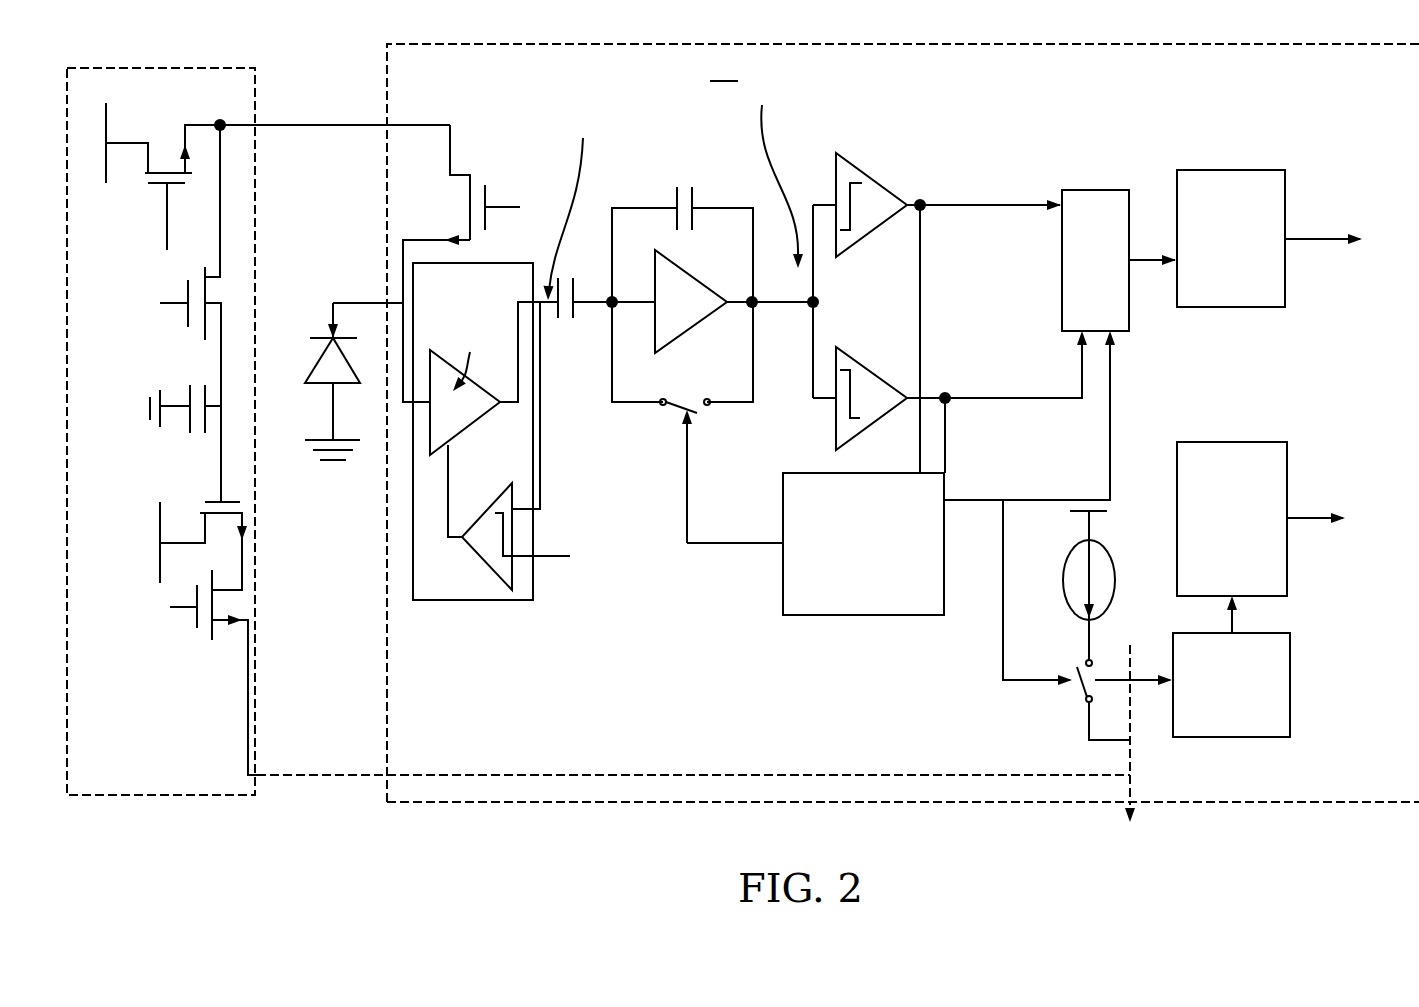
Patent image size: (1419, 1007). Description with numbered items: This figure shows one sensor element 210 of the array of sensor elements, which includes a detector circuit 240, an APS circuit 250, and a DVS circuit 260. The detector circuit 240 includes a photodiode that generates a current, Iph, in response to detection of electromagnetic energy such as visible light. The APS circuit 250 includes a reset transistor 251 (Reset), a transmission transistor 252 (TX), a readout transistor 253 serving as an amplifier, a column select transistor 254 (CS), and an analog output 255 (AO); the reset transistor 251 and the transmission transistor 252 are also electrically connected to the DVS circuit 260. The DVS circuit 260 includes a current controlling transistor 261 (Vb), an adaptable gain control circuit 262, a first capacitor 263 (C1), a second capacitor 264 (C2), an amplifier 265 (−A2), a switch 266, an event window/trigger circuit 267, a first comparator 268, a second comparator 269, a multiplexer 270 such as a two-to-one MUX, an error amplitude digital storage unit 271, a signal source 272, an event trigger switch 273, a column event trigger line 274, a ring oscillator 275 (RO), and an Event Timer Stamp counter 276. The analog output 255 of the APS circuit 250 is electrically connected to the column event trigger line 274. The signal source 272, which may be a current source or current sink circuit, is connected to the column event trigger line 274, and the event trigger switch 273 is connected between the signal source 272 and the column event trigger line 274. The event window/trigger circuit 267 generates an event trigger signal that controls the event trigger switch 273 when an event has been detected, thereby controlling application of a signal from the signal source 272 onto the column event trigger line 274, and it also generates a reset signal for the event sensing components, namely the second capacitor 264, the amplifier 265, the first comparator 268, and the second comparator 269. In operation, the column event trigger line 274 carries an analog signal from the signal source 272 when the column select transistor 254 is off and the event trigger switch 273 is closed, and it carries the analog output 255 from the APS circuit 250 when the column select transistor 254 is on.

The sensor element 210 is at (166, 38).
The detector circuit 240 is at (309, 402).
The APS circuit 250 is at (175, 796).
The reset transistor 251 is at (152, 194).
The transmission transistor 252 is at (176, 325).
The readout transistor 253 is at (178, 460).
The column select transistor 254 is at (184, 633).
The analog output 255 is at (247, 716).
The DVS circuit 260 is at (638, 805).
The current controlling transistor 261 is at (466, 130).
The adaptable gain control circuit 262 is at (475, 601).
The first capacitor 263 is at (570, 320).
The second capacitor 264 is at (700, 196).
The amplifier 265 is at (678, 340).
The switch 266 is at (654, 420).
The event window/trigger circuit 267 is at (865, 616).
The first comparator 268 is at (880, 172).
The second comparator 269 is at (880, 378).
The multiplexer 270 is at (1095, 190).
The error amplitude digital storage unit 271 is at (1286, 272).
The signal source 272 is at (1078, 545).
The event trigger switch 273 is at (1077, 685).
The column event trigger line 274 is at (1130, 780).
The ring oscillator 275 is at (1290, 684).
The Event Timer Stamp counter 276 is at (1288, 542).